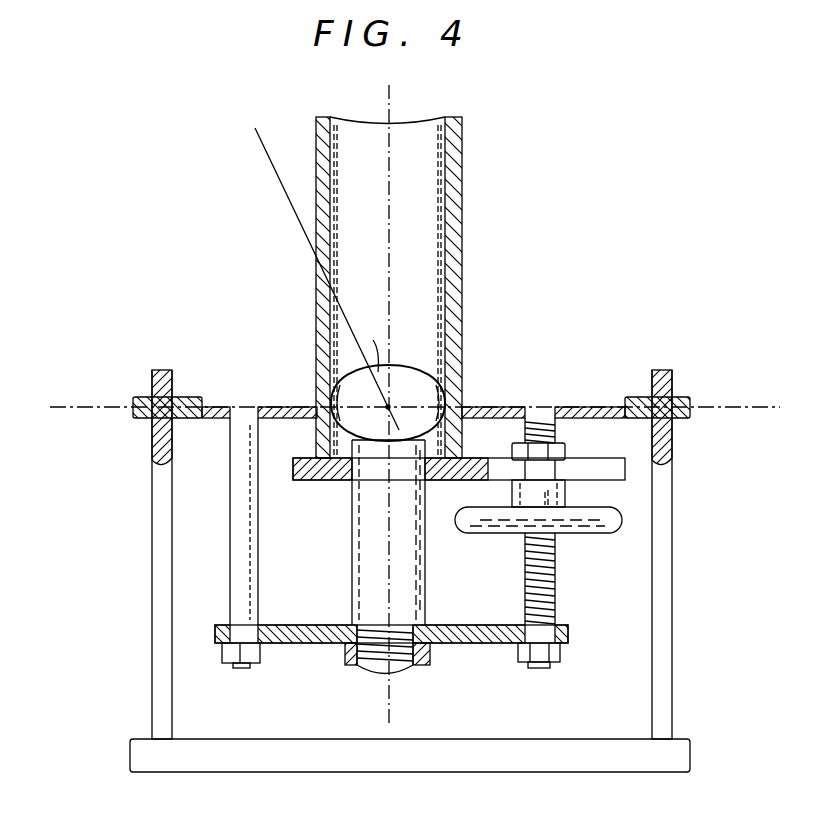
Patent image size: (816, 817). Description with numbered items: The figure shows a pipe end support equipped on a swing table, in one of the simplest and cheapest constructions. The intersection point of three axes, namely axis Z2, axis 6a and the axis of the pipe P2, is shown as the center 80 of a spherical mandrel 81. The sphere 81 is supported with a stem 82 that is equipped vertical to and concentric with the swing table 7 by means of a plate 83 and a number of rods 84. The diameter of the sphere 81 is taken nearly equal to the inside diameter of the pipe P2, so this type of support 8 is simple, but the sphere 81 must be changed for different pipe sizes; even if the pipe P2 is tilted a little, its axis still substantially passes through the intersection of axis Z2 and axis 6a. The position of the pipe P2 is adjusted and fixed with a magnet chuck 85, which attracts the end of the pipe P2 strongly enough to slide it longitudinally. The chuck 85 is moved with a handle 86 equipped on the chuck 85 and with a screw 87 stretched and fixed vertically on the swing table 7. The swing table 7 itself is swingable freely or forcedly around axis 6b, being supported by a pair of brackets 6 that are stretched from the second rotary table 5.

The No. 2 rotary table 5 is at (593, 739).
The bracket 6 is at (152, 548).
The axis 6a is at (134, 405).
The axis 6b is at (52, 407).
The swing table 7 is at (583, 407).
The support 8 is at (619, 306).
The center 80 is at (395, 403).
The spherical mandrel 81 is at (371, 344).
The stem 82 is at (352, 588).
The plate 83 is at (472, 625).
The rod 84 is at (257, 544).
The magnet chuck 85 is at (428, 480).
The handle 86 is at (616, 530).
The screw 87 is at (555, 586).
The pipe P2 is at (462, 193).
The axis Z2 is at (315, 266).